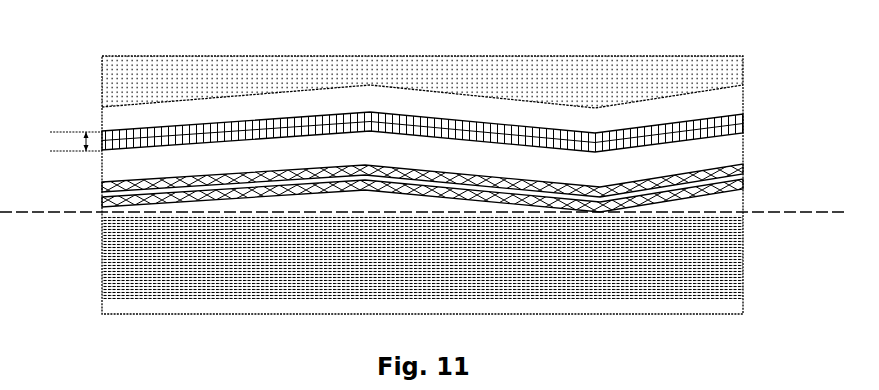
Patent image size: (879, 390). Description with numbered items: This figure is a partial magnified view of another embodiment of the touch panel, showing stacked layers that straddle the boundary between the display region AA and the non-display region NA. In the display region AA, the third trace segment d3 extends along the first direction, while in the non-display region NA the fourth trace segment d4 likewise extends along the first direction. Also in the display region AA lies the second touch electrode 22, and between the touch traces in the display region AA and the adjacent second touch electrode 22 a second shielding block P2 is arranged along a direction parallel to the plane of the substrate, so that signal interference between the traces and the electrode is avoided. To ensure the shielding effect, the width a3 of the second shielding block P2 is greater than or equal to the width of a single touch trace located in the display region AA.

The second touch electrode 22 is at (718, 73).
The second shielding block P2 is at (732, 125).
The width of the second shielding block a3 is at (75, 143).
The third trace segment d3 is at (740, 168).
The fourth trace segment d4 is at (737, 253).
The display region AA is at (41, 103).
The non-display region NA is at (45, 266).